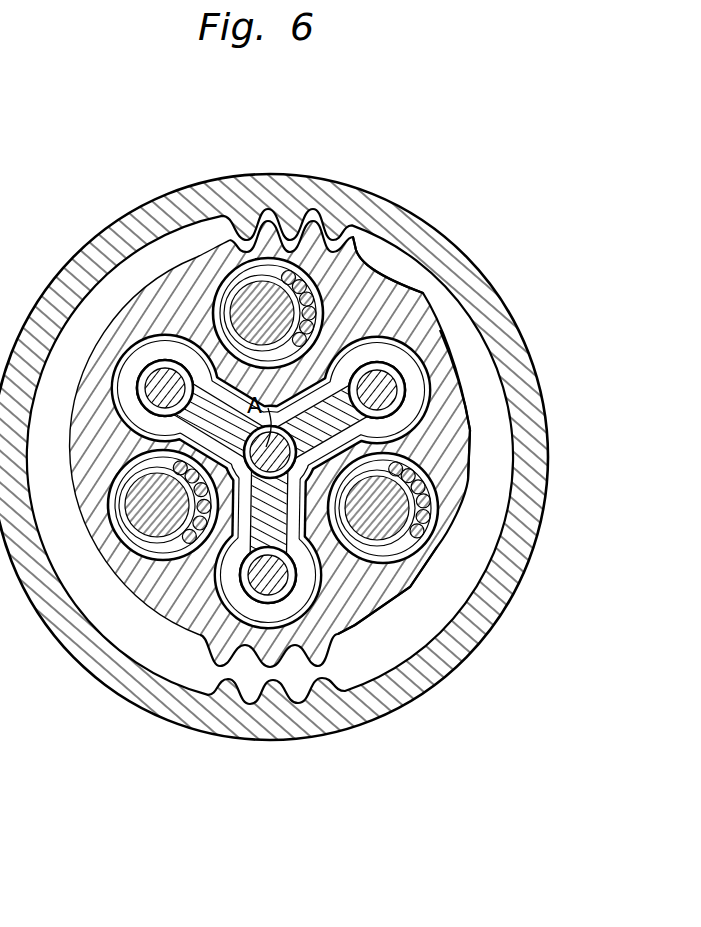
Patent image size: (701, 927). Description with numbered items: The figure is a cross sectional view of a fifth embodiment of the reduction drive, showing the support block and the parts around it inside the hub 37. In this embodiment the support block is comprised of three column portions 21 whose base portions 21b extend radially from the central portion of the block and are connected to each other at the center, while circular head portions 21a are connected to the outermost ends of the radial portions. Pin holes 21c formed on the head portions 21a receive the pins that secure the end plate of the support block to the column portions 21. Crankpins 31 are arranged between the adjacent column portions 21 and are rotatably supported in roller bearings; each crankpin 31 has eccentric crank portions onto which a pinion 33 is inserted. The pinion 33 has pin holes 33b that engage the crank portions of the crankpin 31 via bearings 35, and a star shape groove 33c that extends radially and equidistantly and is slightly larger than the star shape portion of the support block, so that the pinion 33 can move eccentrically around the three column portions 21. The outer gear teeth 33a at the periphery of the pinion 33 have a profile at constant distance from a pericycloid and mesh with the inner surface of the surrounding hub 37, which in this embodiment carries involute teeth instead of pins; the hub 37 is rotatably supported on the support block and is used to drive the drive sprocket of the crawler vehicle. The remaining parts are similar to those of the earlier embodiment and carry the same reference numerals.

The column portion 21 is at (268, 600).
The head portion 21a is at (400, 367).
The base portion 21b is at (315, 417).
The pin hole 21c is at (197, 634).
The crankpin 31 is at (420, 517).
The pinion 33 is at (385, 290).
The outer gear teeth 33a is at (384, 266).
The pin hole 33b is at (440, 433).
The star shape groove 33c is at (313, 578).
The bearing 35 is at (533, 563).
The hub 37 is at (440, 235).